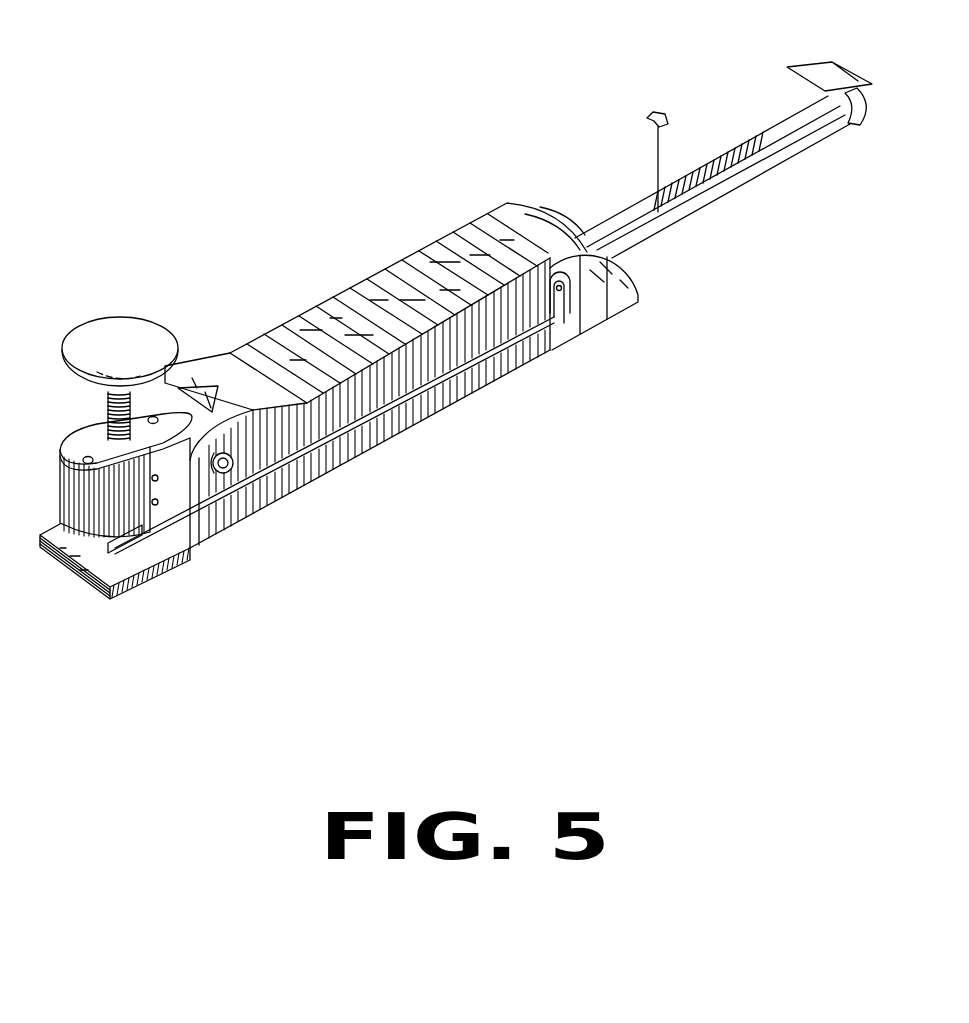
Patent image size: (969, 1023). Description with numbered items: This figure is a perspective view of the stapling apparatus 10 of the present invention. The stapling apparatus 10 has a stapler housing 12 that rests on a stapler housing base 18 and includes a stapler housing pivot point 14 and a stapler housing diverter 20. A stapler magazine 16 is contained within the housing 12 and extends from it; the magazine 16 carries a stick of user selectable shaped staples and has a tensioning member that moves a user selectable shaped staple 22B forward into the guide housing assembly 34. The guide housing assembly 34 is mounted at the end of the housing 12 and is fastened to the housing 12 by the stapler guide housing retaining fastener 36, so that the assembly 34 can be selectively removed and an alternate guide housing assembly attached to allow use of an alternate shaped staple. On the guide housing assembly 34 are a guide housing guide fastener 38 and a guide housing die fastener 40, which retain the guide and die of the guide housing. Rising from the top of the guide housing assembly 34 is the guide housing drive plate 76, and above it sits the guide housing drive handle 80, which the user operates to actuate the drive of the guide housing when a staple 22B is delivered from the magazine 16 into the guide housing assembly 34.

The stapling apparatus 10 is at (299, 190).
The stapler housing 12 is at (447, 235).
The stapler housing pivot point 14 is at (567, 290).
The stapler magazine 16 is at (790, 112).
The stapler housing base 18 is at (397, 427).
The stapler housing diverter 20 is at (130, 540).
The user selectable shaped staple 22B is at (655, 110).
The guide housing assembly 34 is at (75, 292).
The stapler guide housing retaining fastener 36 is at (232, 463).
The guide housing guide fastener 38 is at (158, 503).
The guide housing die fastener 40 is at (158, 478).
The guide housing drive plate 76 is at (108, 408).
The guide housing drive handle 80 is at (148, 340).